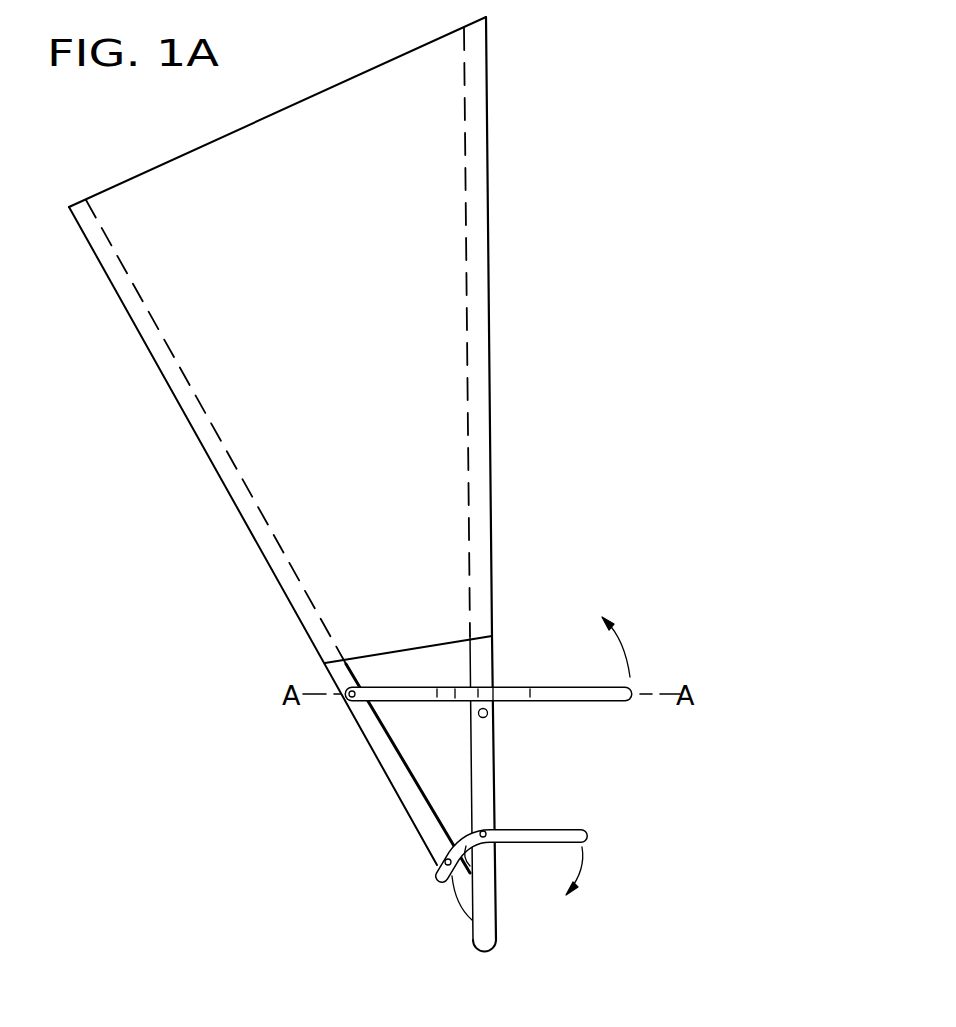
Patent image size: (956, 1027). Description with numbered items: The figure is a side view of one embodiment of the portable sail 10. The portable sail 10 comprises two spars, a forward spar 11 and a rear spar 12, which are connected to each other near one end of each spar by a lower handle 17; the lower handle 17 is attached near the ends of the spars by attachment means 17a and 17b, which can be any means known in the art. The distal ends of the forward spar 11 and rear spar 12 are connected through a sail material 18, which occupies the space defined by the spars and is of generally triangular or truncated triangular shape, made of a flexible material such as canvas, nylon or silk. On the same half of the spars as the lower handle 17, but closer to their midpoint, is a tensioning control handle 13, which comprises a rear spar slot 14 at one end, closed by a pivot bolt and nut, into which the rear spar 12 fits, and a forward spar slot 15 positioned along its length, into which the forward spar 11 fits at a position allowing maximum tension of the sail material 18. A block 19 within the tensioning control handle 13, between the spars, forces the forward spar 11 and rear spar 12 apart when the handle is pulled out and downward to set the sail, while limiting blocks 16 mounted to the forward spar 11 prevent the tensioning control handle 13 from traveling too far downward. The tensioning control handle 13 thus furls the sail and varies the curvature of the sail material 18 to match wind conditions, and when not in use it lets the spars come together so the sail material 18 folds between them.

The portable sail 10 is at (503, 263).
The forward spar 11 is at (491, 458).
The rear spar 12 is at (232, 497).
The tensioning control handle 13 is at (505, 686).
The rear spar slot 14 is at (358, 689).
The forward spar slot 15 is at (497, 700).
The limiting blocks 16 is at (486, 718).
The lower handle 17 is at (545, 823).
The attachment means 17a is at (438, 869).
The attachment means 17b is at (497, 857).
The sail material 18 is at (451, 325).
The block 19 is at (455, 703).